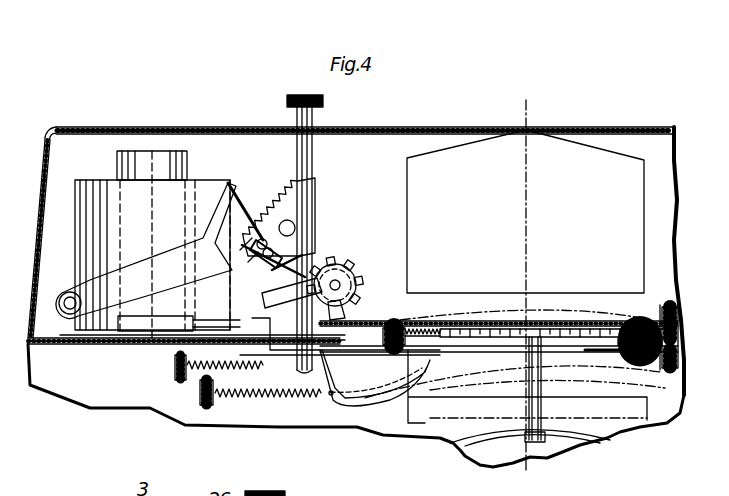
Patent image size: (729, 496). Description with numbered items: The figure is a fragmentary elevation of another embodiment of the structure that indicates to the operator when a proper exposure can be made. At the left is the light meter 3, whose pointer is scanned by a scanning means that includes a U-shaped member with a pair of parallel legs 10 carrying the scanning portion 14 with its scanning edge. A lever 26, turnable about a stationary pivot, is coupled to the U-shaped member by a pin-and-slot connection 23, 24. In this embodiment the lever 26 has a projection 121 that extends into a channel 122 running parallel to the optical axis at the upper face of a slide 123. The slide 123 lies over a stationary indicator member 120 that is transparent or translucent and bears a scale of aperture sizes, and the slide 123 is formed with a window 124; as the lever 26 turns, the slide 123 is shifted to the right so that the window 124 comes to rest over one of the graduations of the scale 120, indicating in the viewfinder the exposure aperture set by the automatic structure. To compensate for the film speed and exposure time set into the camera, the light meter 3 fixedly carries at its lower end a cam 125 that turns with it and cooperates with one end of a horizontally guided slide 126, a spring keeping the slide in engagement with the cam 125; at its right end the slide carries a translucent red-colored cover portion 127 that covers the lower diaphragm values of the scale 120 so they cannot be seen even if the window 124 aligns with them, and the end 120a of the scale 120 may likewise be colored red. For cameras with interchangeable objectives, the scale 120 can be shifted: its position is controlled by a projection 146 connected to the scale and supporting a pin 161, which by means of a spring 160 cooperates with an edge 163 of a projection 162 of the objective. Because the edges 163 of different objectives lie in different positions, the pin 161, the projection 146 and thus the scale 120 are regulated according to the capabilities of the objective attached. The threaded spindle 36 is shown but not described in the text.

The light meter 3 is at (112, 190).
The legs 10 is at (102, 305).
The scanning portion 14 is at (258, 236).
The pin of pin-and-slot connection 23 is at (229, 180).
The slot of pin-and-slot connection 24 is at (290, 247).
The lever 26 is at (292, 197).
The threaded spindle 36 is at (313, 160).
The stationary indicator member 120 is at (615, 322).
The end of scale 120a is at (488, 320).
The projection 121 is at (352, 300).
The channel 122 is at (342, 318).
The slide 123 is at (400, 325).
The window 124 is at (455, 320).
The cam 125 is at (240, 325).
The slide 126 is at (340, 360).
The cover slide 127 is at (622, 352).
The projection 146 is at (540, 395).
The spring 160 is at (443, 322).
The pin 161 is at (536, 440).
The projection of interchangeable objective 162 is at (478, 443).
The edge 163 is at (525, 442).